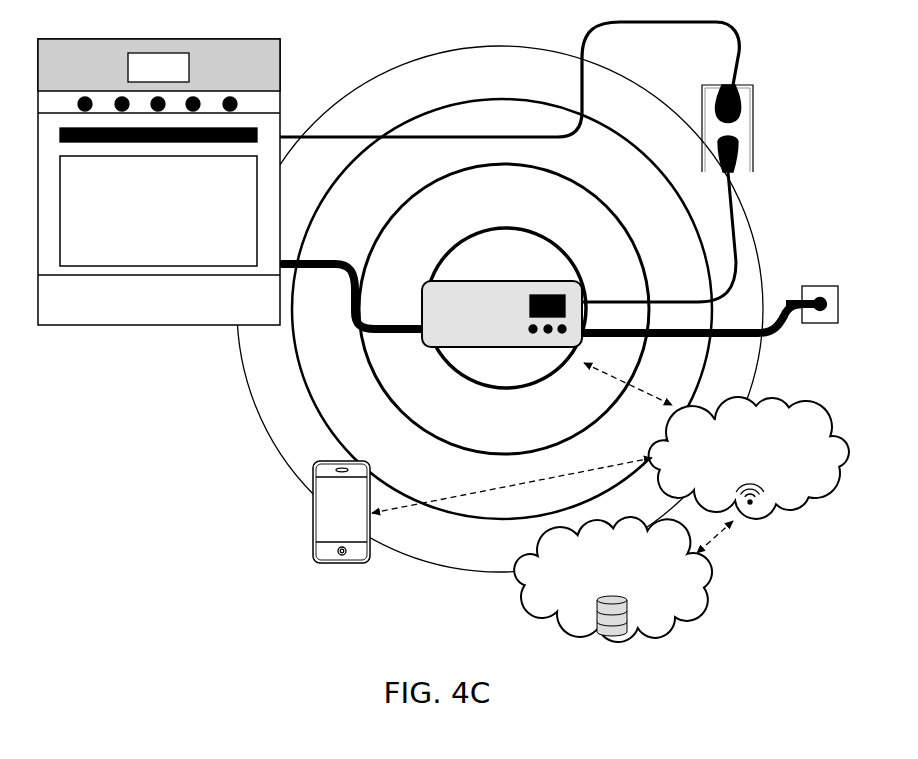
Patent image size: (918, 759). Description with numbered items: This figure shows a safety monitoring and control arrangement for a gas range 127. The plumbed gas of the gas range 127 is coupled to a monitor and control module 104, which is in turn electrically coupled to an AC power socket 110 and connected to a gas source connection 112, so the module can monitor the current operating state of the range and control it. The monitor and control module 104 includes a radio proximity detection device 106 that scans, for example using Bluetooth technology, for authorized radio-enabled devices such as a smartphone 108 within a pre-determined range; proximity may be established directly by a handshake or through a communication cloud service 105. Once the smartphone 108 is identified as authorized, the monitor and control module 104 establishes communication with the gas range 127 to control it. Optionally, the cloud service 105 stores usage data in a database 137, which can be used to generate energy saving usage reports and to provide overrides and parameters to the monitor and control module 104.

The monitor and control module 104 is at (579, 276).
The cloud service 105 is at (610, 441).
The radio proximity detection device 106 is at (252, 406).
The smartphone 108 is at (340, 528).
The AC power socket 110 is at (772, 128).
The gas source connection 112 is at (724, 330).
The gas range 127 is at (388, 175).
The database 137 is at (623, 579).